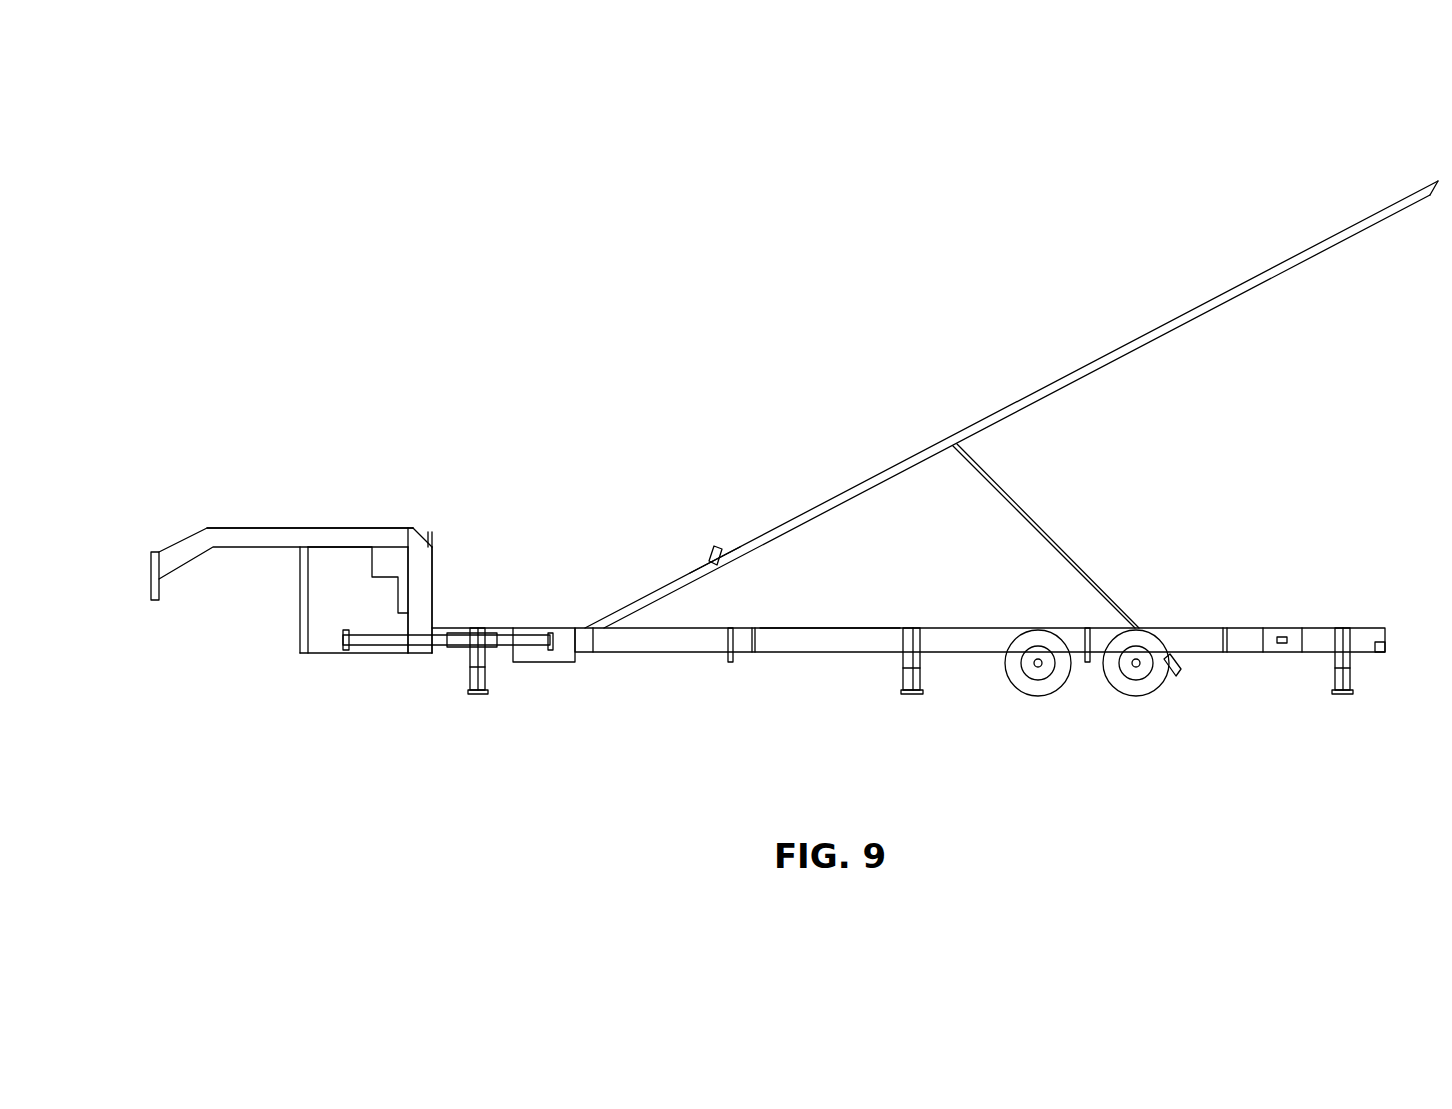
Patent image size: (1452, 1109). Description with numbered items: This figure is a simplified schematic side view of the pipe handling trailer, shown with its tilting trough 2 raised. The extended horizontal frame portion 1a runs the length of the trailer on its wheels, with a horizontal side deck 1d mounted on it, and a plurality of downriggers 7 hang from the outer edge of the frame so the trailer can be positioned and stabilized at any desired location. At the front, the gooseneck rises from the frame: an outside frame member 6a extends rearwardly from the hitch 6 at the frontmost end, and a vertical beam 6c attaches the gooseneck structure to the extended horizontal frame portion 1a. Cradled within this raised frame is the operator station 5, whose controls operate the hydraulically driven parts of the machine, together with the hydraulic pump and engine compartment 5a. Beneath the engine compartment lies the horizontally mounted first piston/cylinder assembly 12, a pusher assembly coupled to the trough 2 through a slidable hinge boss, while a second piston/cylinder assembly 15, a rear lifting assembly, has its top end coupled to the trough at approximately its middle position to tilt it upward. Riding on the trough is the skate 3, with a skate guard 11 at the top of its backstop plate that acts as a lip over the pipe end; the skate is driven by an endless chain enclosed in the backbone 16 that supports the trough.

The extended horizontal frame portion 1a is at (1180, 620).
The horizontal side deck 1d is at (828, 627).
The tilting trough 2 is at (1003, 402).
The skate 3 is at (707, 560).
The operator station 5 is at (412, 528).
The hydraulic pump and engine compartment 5a is at (310, 618).
The hitch 6 is at (152, 602).
The outside frame member 6a is at (273, 528).
The vertical beam 6c is at (432, 572).
The downrigger 7 is at (475, 695).
The skate guard 11 is at (718, 542).
The first piston/cylinder assembly 12 is at (420, 646).
The second piston/cylinder assembly 15 is at (1058, 520).
The backbone 16 is at (232, 508).